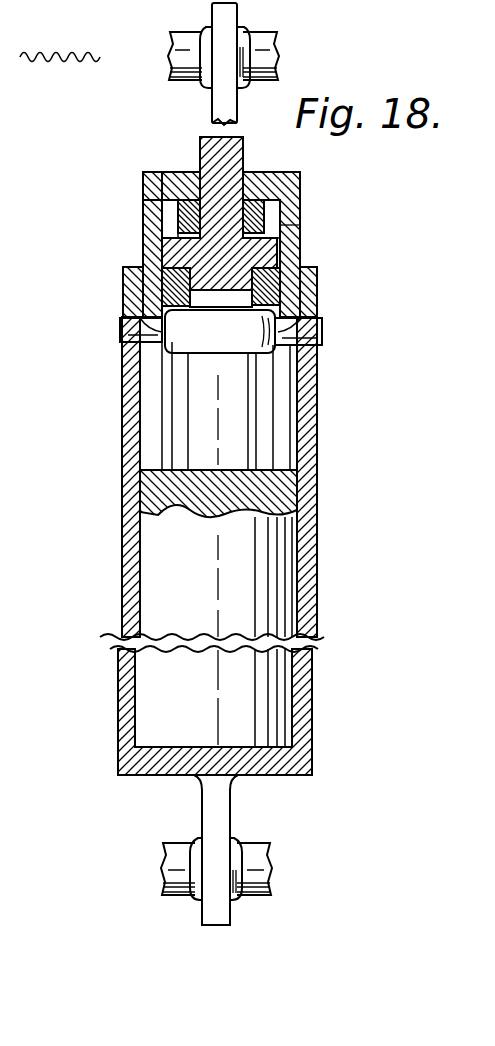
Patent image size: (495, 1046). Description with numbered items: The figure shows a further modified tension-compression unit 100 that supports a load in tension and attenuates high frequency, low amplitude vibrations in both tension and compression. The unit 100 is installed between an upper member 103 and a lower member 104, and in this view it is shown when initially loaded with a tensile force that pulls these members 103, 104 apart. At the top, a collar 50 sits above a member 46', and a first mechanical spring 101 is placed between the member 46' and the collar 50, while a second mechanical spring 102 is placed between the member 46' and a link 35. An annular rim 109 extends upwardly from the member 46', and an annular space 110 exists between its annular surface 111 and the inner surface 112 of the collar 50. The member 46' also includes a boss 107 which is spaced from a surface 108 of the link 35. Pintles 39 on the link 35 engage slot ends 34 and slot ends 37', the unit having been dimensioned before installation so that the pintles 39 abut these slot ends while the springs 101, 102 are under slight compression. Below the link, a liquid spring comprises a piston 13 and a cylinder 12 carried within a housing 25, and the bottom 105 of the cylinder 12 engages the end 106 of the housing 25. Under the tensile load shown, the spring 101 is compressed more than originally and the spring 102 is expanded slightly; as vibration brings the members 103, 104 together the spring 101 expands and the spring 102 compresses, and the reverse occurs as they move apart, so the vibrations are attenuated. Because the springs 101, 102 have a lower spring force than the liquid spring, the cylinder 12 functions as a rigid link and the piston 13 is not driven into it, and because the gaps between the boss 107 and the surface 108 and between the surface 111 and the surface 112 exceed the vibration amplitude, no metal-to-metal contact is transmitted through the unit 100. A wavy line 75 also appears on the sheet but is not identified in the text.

The flexible line 75 is at (58, 62).
The member 103 is at (272, 42).
The collar 50 is at (180, 172).
The annular space 110 is at (300, 181).
The inner surface 112 is at (150, 186).
The first mechanical spring 101 is at (168, 212).
The annular surface 111 is at (300, 208).
The annular rim 109 is at (300, 234).
The member 46' is at (162, 228).
The second mechanical spring 102 is at (132, 281).
The boss 107 is at (316, 279).
The surface 108 is at (318, 299).
The slot ends 34 is at (124, 322).
The slot ends 37' is at (233, 345).
The pintles 39 is at (150, 356).
The link 35 is at (207, 348).
The tension-compression unit 100 is at (345, 567).
The piston 13 is at (242, 444).
The housing 25 is at (315, 660).
The cylinder 12 is at (162, 665).
The end 106 is at (162, 735).
The bottom 105 is at (240, 750).
The member 104 is at (162, 858).